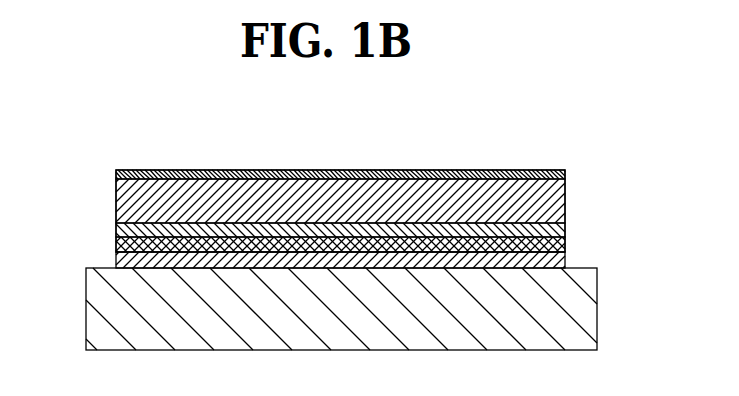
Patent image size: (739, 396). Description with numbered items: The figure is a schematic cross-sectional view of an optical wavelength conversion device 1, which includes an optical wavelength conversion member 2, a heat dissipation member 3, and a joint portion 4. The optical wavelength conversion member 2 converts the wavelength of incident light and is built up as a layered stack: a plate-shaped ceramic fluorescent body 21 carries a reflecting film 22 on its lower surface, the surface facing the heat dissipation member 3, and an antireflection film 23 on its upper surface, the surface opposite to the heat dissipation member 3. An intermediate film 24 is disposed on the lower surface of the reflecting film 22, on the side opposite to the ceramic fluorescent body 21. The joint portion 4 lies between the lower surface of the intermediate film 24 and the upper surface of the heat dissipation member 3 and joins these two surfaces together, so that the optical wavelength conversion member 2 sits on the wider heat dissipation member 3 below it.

The optical wavelength conversion device 1 is at (416, 117).
The optical wavelength conversion member 2 is at (107, 203).
The heat dissipation member 3 is at (110, 309).
The joint portion 4 is at (122, 262).
The ceramic fluorescent body 21 is at (565, 192).
The reflecting film 22 is at (567, 230).
The antireflection film 23 is at (535, 170).
The intermediate film 24 is at (567, 244).